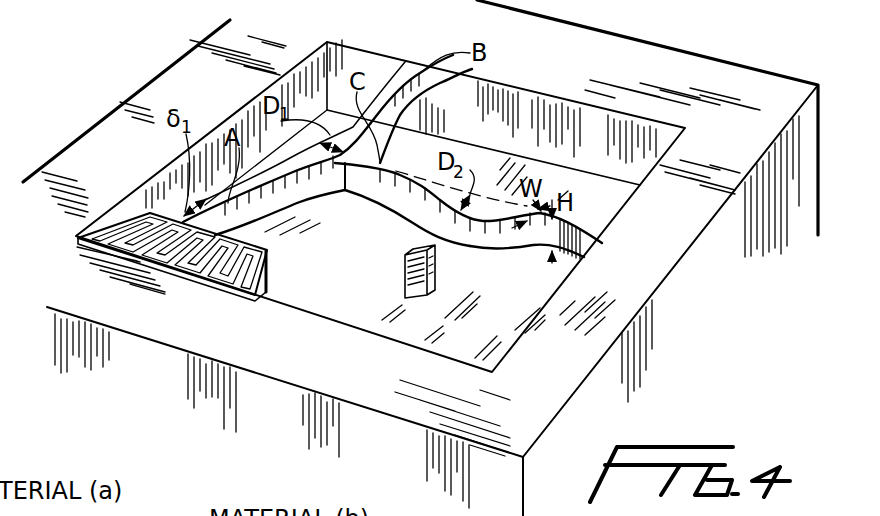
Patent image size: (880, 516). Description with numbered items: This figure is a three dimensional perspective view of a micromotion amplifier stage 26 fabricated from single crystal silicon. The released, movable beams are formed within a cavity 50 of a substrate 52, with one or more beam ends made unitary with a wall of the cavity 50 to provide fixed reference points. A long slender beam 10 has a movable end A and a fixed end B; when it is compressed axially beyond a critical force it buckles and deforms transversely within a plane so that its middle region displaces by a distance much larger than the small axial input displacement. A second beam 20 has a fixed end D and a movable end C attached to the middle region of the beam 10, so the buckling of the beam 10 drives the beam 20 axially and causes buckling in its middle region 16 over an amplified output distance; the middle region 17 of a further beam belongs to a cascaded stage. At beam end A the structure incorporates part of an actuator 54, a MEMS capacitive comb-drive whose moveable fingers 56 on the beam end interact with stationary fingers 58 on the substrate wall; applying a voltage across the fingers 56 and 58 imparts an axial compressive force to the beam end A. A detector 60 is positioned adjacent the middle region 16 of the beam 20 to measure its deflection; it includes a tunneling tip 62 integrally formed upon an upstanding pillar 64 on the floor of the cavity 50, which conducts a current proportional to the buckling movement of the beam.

The beam 10 is at (409, 108).
The middle region of beam 20 16 is at (340, 193).
The middle region of beam 30 17 is at (463, 238).
The beam 20 is at (406, 207).
The micromotion amplifier stage 26 is at (350, 229).
The cavity 50 is at (565, 116).
The substrate 52 is at (690, 66).
The actuator 54 is at (141, 214).
The moveable fingers 56 is at (266, 273).
The stationary fingers 58 is at (266, 272).
The detector 60 is at (451, 279).
The tunneling tip 62 is at (422, 245).
The pillar 64 is at (427, 297).